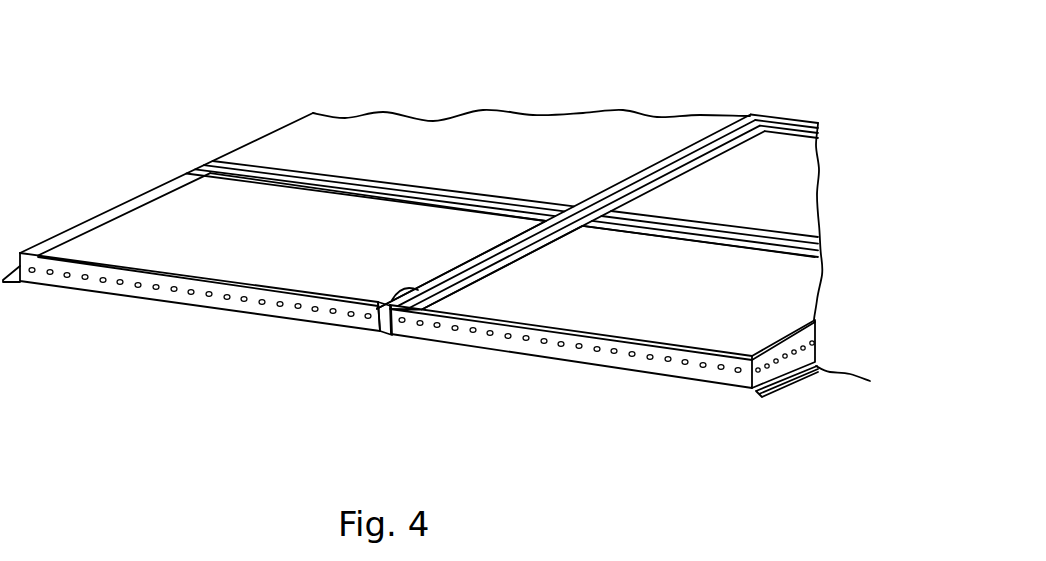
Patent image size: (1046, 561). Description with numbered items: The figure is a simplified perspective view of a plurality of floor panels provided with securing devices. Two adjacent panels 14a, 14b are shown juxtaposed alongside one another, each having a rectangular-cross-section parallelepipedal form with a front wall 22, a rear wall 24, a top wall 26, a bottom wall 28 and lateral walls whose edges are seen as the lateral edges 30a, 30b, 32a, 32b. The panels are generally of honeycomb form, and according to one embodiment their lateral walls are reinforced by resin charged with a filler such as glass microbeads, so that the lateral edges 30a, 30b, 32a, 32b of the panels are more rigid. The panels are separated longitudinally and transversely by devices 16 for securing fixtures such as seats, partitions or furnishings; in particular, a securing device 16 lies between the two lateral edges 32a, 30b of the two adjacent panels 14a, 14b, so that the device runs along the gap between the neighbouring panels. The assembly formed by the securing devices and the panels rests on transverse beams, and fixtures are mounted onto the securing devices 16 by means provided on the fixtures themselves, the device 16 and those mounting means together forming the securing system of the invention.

The panel 14a is at (272, 253).
The panel 14b is at (490, 307).
The device for securing fixtures 16 is at (720, 137).
The front wall 22 is at (695, 372).
The rear wall 24 is at (775, 238).
The top wall 26 is at (640, 310).
The bottom wall 28 is at (553, 360).
The lateral edge 30a is at (150, 186).
The lateral edge 30b is at (380, 330).
The lateral edge 32a is at (492, 250).
The lateral edge 32b is at (815, 367).